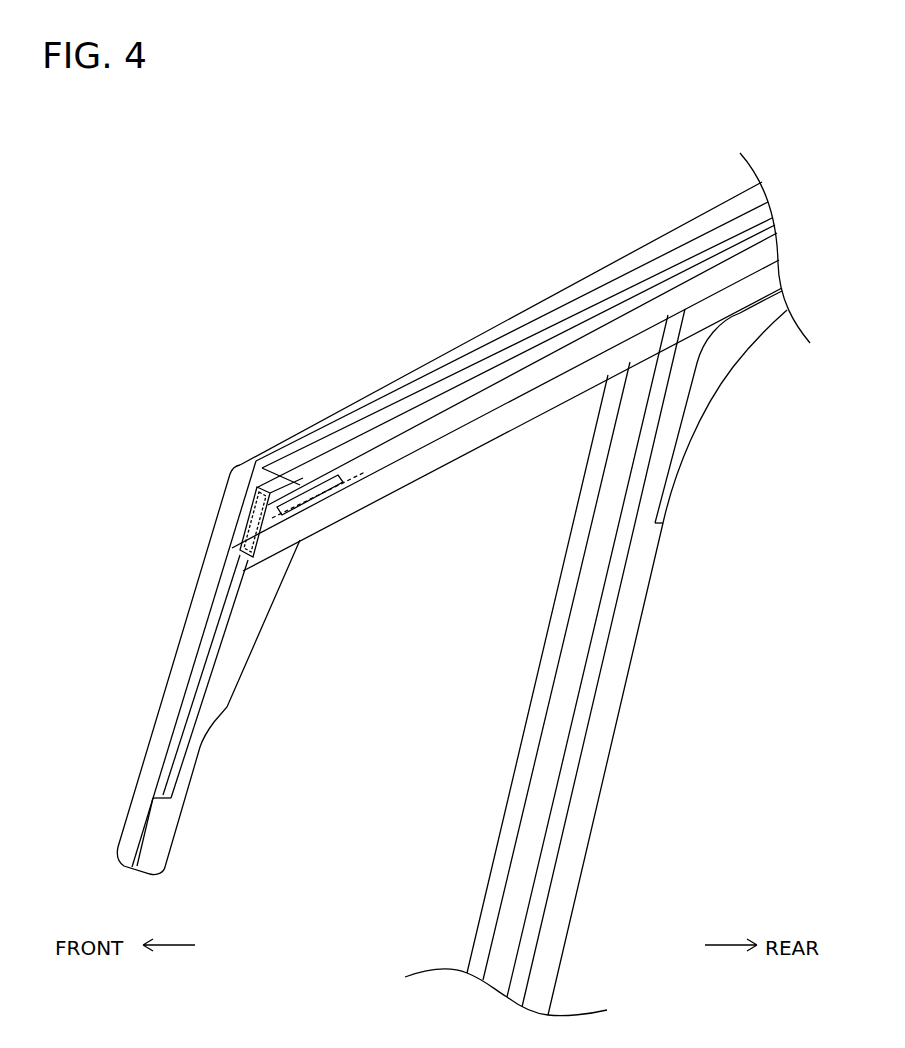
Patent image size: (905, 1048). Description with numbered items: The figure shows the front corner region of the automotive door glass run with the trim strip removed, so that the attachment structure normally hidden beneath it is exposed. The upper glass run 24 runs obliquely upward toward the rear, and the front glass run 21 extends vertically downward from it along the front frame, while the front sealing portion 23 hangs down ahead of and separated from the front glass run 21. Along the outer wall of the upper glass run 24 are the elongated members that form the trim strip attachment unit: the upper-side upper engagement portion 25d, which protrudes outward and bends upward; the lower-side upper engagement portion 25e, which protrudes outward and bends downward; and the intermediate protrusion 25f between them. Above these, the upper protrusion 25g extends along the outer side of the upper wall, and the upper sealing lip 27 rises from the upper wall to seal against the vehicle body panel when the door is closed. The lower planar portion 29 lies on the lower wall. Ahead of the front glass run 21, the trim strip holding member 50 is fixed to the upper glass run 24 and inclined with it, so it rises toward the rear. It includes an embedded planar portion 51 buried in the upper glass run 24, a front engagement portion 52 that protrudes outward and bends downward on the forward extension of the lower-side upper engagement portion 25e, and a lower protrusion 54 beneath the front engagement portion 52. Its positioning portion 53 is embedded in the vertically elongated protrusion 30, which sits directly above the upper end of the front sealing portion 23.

The front glass run 21 is at (633, 660).
The front sealing portion 23 is at (158, 703).
The upper glass run 24 is at (632, 252).
The upper-side upper engagement portion 25d is at (473, 373).
The lower-side upper engagement portion 25e is at (520, 387).
The intermediate protrusion 25f is at (688, 283).
The upper protrusion 25g is at (580, 305).
The upper sealing lip 27 is at (523, 323).
The lower planar portion 29 is at (473, 433).
The protrusion 30 is at (261, 452).
The trim strip holding member 50 is at (347, 476).
The embedded planar portion 51 is at (268, 523).
The front engagement portion 52 is at (300, 465).
The positioning portion 53 is at (245, 478).
The lower protrusion 54 is at (367, 470).